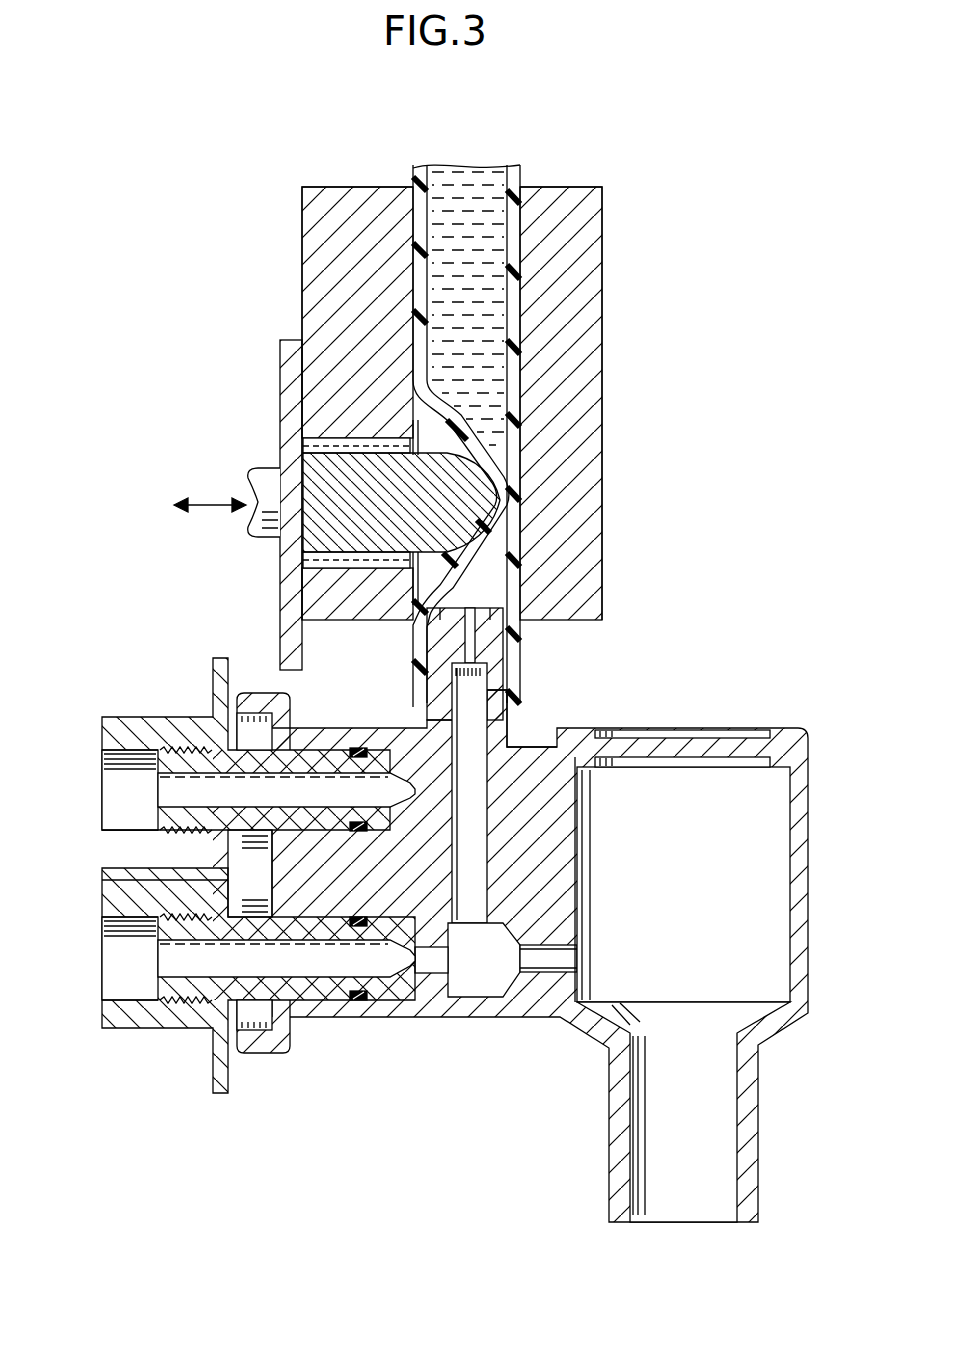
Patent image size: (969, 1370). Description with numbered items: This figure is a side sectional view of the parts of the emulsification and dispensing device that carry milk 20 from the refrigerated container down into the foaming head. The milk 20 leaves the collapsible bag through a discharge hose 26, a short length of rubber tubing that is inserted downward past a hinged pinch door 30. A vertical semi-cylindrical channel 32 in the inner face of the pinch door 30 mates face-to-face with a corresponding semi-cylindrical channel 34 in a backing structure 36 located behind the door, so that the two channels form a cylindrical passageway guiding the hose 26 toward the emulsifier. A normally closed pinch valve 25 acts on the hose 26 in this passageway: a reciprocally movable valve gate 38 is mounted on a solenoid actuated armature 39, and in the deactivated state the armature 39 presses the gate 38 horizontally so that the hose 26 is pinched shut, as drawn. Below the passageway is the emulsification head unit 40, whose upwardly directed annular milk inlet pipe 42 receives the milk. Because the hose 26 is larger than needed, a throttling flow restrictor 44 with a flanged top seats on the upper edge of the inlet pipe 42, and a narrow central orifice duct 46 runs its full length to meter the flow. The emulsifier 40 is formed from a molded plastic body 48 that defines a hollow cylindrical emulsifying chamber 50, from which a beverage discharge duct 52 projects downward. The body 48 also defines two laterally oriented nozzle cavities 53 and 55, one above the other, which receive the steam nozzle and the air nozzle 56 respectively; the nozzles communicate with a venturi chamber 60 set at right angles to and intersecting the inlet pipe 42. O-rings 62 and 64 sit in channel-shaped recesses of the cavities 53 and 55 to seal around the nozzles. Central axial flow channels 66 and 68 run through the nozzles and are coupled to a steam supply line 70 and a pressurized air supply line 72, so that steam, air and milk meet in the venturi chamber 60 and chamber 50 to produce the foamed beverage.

The milk 20 is at (463, 190).
The pinch valve 25 is at (624, 269).
The discharge hose 26 is at (521, 311).
The pinch door 30 is at (602, 437).
The semi-cylindrical channel 32 is at (517, 546).
The semi-cylindrical channel 34 is at (420, 418).
The backing structure 36 is at (302, 237).
The valve gate 38 is at (325, 455).
The solenoid actuated armature 39 is at (265, 487).
The emulsification head unit 40 is at (692, 708).
The milk inlet pipe 42 is at (510, 720).
The throttling flow restrictor 44 is at (487, 640).
The orifice duct 46 is at (467, 640).
The emulsifier body 48 is at (810, 868).
The emulsifying chamber 50 is at (701, 873).
The beverage discharge duct 52 is at (758, 1137).
The nozzle cavity 53 is at (252, 1035).
The nozzle cavity 55 is at (250, 712).
The air nozzle 56 is at (328, 748).
The venturi chamber 60 is at (470, 970).
The O-ring 62 is at (355, 1000).
The O-ring 64 is at (357, 745).
The axial flow channel 66 is at (180, 960).
The axial flow channel 68 is at (175, 792).
The steam supply line 70 is at (113, 945).
The pressurized air supply line 72 is at (118, 772).